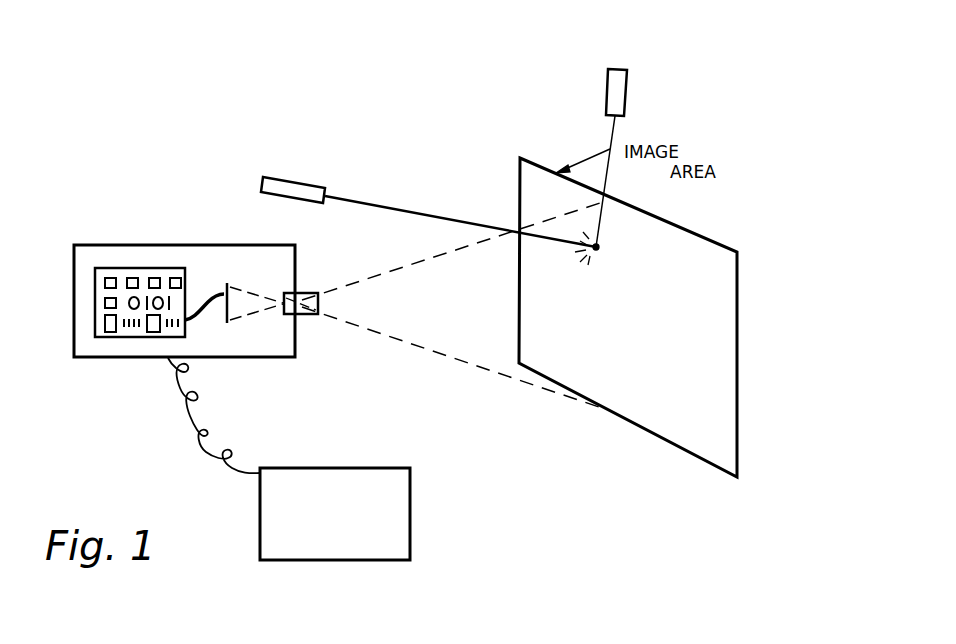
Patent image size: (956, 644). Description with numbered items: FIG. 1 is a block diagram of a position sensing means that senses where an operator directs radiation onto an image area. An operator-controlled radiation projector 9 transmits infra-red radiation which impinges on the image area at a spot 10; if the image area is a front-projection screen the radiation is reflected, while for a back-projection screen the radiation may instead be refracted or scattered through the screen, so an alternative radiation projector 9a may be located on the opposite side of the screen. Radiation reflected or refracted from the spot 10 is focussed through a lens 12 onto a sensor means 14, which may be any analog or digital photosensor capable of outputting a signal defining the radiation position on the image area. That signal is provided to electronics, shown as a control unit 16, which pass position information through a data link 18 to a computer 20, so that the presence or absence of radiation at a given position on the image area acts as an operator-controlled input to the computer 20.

The operator-controlled radiation projector 9 is at (297, 200).
The alternative radiation projector 9a is at (627, 92).
The spot 10 is at (598, 250).
The lens 12 is at (314, 288).
The sensor means 14 is at (240, 332).
The control panel 16 is at (118, 342).
The data link 18 is at (185, 449).
The computer 20 is at (422, 513).